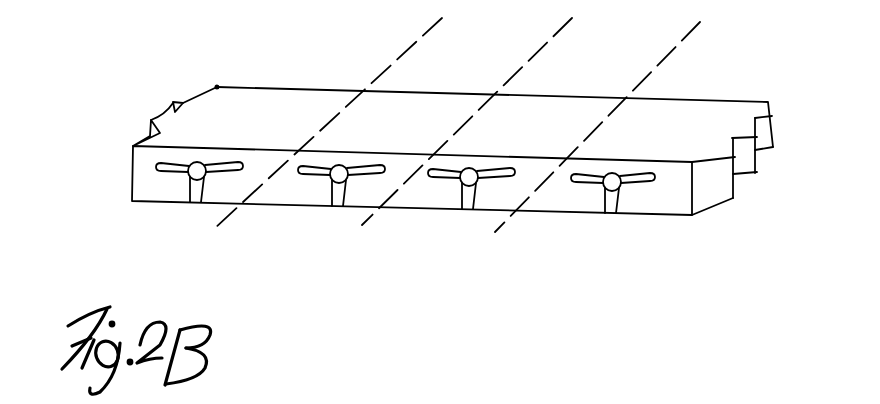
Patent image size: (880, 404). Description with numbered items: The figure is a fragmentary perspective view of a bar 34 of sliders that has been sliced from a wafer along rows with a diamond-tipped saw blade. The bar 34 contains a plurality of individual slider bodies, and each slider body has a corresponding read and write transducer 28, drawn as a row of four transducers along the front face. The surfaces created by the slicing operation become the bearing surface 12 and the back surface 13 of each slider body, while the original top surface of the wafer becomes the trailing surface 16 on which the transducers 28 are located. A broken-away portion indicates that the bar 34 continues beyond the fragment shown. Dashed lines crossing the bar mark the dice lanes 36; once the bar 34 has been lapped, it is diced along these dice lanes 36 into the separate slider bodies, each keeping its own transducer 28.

The bearing surface 12 is at (141, 203).
The back surface 13 is at (176, 131).
The trailing surface 16 is at (140, 168).
The read and write transducer 28 is at (189, 203).
The bar 34 is at (742, 77).
The dice lane 36 is at (425, 32).